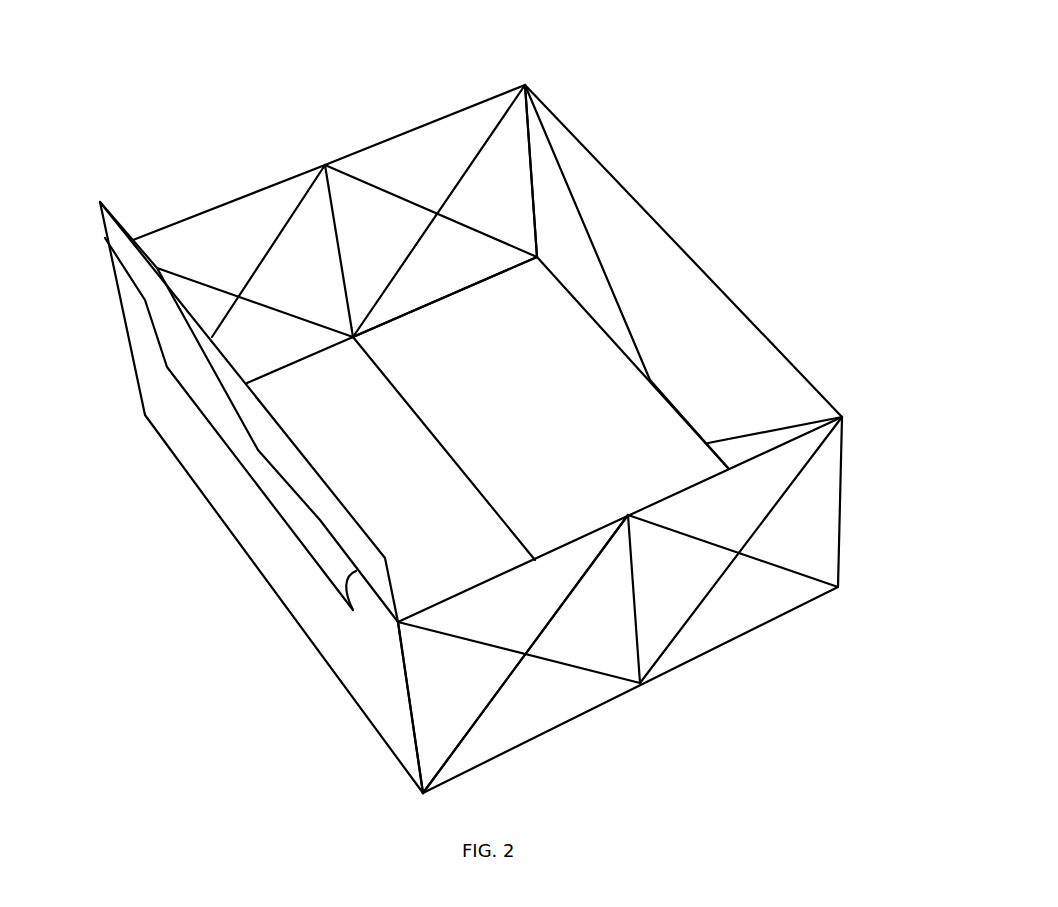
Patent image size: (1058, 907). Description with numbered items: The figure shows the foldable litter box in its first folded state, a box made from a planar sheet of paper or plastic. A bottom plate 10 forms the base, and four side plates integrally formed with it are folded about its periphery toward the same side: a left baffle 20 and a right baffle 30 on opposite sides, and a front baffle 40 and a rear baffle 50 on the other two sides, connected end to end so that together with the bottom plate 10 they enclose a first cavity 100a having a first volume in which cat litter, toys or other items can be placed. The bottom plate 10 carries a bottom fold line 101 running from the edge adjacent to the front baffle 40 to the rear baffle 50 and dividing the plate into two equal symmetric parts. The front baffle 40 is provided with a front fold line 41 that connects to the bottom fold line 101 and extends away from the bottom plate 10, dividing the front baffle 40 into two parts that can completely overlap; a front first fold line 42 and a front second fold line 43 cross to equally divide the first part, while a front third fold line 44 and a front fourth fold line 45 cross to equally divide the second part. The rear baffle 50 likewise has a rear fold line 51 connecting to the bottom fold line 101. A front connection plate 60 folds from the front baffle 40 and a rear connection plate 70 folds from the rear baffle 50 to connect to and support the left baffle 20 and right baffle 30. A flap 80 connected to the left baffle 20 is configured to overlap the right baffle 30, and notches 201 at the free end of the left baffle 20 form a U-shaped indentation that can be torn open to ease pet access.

The bottom plate 10 is at (570, 430).
The bottom fold line 101 is at (448, 437).
The left baffle 20 is at (302, 592).
The notches 201 is at (263, 498).
The right baffle 30 is at (615, 222).
The front baffle 40 is at (432, 703).
The front fold line 41 is at (642, 633).
The front first fold line 42 is at (613, 680).
The front second fold line 43 is at (468, 743).
The front third fold line 44 is at (703, 603).
The front fourth fold line 45 is at (790, 565).
The rear baffle 50 is at (233, 217).
The rear fold line 51 is at (327, 207).
The front connection plate 60 is at (762, 340).
The rear connection plate 70 is at (608, 136).
The flap 80 is at (108, 227).
The first cavity 100a is at (452, 328).